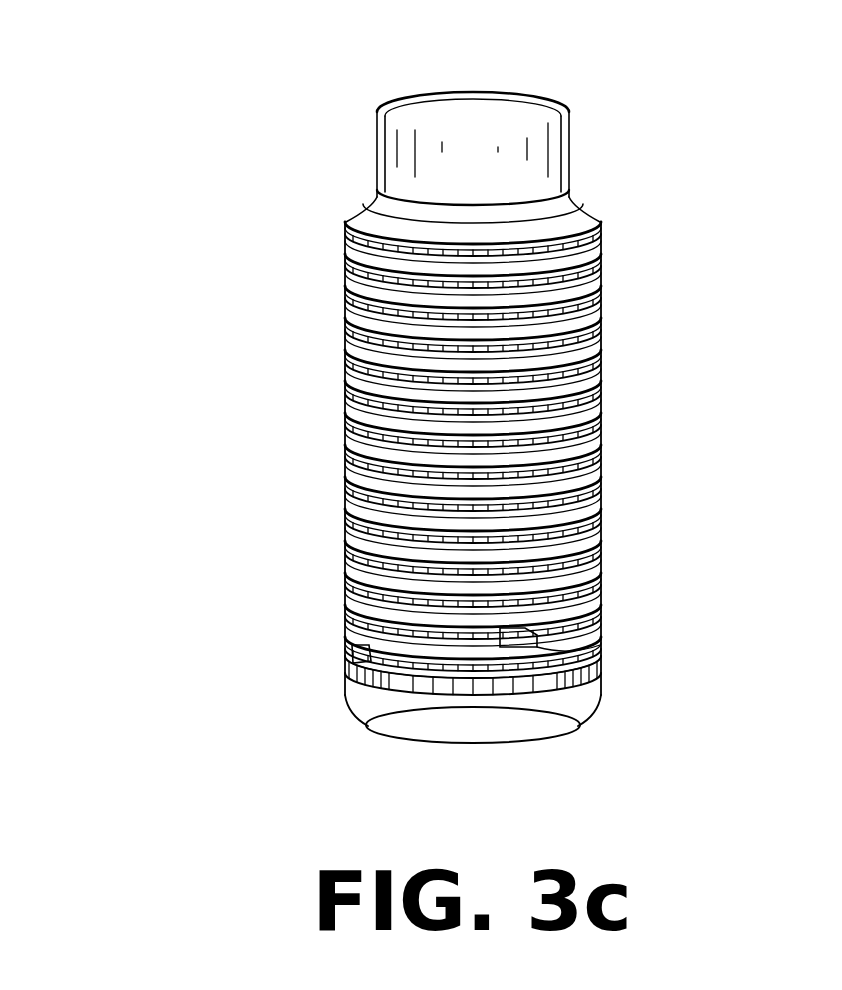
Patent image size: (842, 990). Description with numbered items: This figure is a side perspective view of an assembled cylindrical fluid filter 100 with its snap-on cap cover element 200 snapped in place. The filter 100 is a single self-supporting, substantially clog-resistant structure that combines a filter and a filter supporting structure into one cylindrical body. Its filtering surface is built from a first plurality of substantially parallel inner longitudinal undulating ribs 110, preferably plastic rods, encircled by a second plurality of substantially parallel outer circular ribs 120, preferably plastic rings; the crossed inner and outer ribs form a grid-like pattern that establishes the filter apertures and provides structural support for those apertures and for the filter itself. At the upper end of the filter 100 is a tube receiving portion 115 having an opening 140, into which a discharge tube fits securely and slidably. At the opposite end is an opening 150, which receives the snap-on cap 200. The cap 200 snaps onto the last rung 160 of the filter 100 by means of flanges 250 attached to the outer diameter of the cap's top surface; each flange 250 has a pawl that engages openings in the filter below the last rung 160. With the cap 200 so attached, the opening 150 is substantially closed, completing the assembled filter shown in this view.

The cylindrical fluid filter 100 is at (198, 300).
The inner longitudinal undulating ribs 110 is at (598, 428).
The tube receiving portion 115 is at (417, 154).
The outer circular ribs 120 is at (598, 352).
The opening 140 is at (460, 92).
The opening 150 is at (355, 705).
The last rung 160 is at (567, 667).
The snap-on cap cover element 200 is at (477, 735).
The flanges 250 is at (347, 660).